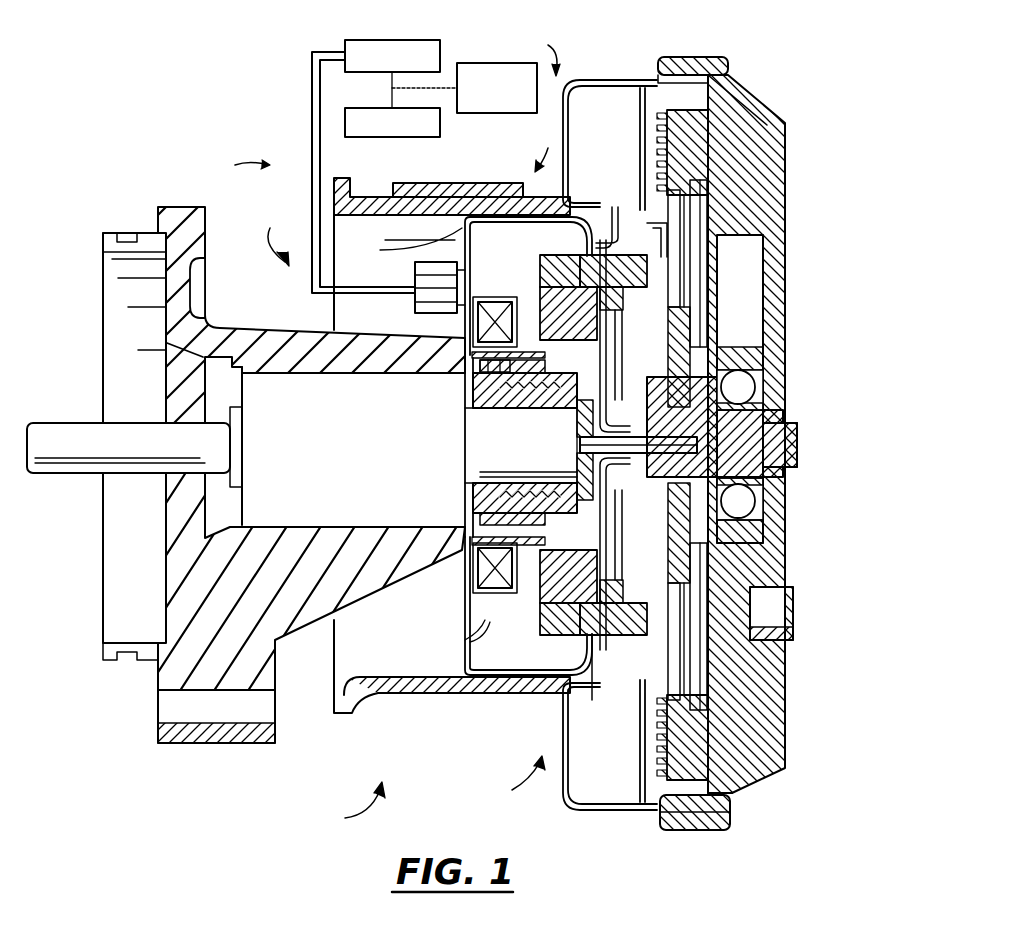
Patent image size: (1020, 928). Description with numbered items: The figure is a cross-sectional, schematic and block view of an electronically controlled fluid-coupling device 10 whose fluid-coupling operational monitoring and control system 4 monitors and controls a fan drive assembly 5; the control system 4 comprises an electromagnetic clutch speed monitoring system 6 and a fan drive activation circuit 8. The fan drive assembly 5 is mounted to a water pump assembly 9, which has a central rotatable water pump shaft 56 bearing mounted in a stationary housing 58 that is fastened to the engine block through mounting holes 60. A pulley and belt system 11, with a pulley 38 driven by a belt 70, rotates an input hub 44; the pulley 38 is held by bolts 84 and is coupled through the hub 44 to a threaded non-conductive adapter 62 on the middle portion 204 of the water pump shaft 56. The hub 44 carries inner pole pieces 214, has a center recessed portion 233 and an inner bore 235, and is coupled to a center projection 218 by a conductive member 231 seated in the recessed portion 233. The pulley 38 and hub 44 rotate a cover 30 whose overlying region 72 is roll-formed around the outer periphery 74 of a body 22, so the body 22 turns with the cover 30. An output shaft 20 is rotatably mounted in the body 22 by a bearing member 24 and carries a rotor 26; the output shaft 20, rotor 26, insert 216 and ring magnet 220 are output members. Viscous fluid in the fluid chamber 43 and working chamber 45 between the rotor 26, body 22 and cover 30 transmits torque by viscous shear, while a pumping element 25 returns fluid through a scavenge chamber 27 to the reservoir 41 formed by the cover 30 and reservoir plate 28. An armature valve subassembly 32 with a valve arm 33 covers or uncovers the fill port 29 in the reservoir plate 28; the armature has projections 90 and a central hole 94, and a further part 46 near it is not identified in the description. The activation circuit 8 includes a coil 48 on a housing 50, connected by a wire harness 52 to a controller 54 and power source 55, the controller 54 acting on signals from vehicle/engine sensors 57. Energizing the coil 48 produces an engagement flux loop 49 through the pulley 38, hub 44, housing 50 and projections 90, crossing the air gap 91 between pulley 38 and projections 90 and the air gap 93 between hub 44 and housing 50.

The fluid-coupling operational monitoring and control system 4 is at (240, 164).
The fan drive assembly 5 is at (545, 54).
The electromagnetic clutch speed monitoring system 6 is at (276, 236).
The fan drive activation circuit 8 is at (519, 776).
The water pump assembly 9 is at (88, 243).
The electronically controlled fluid-coupling device 10 is at (351, 804).
The pulley and belt system 11 is at (547, 149).
The output shaft 20 is at (720, 410).
The body 22 is at (748, 95).
The bearing member 24 is at (740, 370).
The pumping element 25 is at (735, 792).
The rotor member 26 is at (700, 165).
The scavenge chamber 27 is at (755, 600).
The reservoir plate 28 is at (705, 265).
The fill port 29 is at (695, 290).
The cover member 30 is at (668, 828).
The armature valve subassembly 32 is at (745, 545).
The valve arm 33 is at (690, 235).
The pulley 38 is at (376, 200).
The fluid reservoir 41 is at (570, 545).
The fluid chamber 43 is at (660, 690).
The hub 44 is at (560, 608).
The working chamber 45 is at (712, 140).
The frame leg 46 is at (548, 660).
The coil 48 is at (478, 322).
The engagement flux loop 49 is at (575, 195).
The housing 50 is at (395, 254).
The wire harness 52 is at (312, 95).
The controller 54 is at (348, 40).
The power source 55 is at (505, 63).
The water pump shaft 56 is at (48, 423).
The vehicle/engine sensors 57 is at (375, 108).
The stationary housing 58 is at (168, 675).
The mounting holes 60 is at (258, 732).
The threaded non-conductive adapter 62 is at (478, 490).
The belt 70 is at (463, 183).
The overlying region 72 is at (698, 56).
The outer periphery 74 is at (650, 86).
The bolts 84 is at (632, 285).
The projections 90 is at (768, 630).
The air gap 91 is at (575, 328).
The air gap 93 is at (538, 350).
The central hole 94 is at (540, 470).
The middle portion 204 is at (470, 430).
The inner pole pieces 214 is at (480, 368).
The insert 216 is at (577, 470).
The center projection 218 is at (750, 380).
The ring magnet 220 is at (577, 410).
The conductive member 231 is at (700, 445).
The center recessed portion 233 is at (405, 415).
The inner bore 235 is at (478, 520).